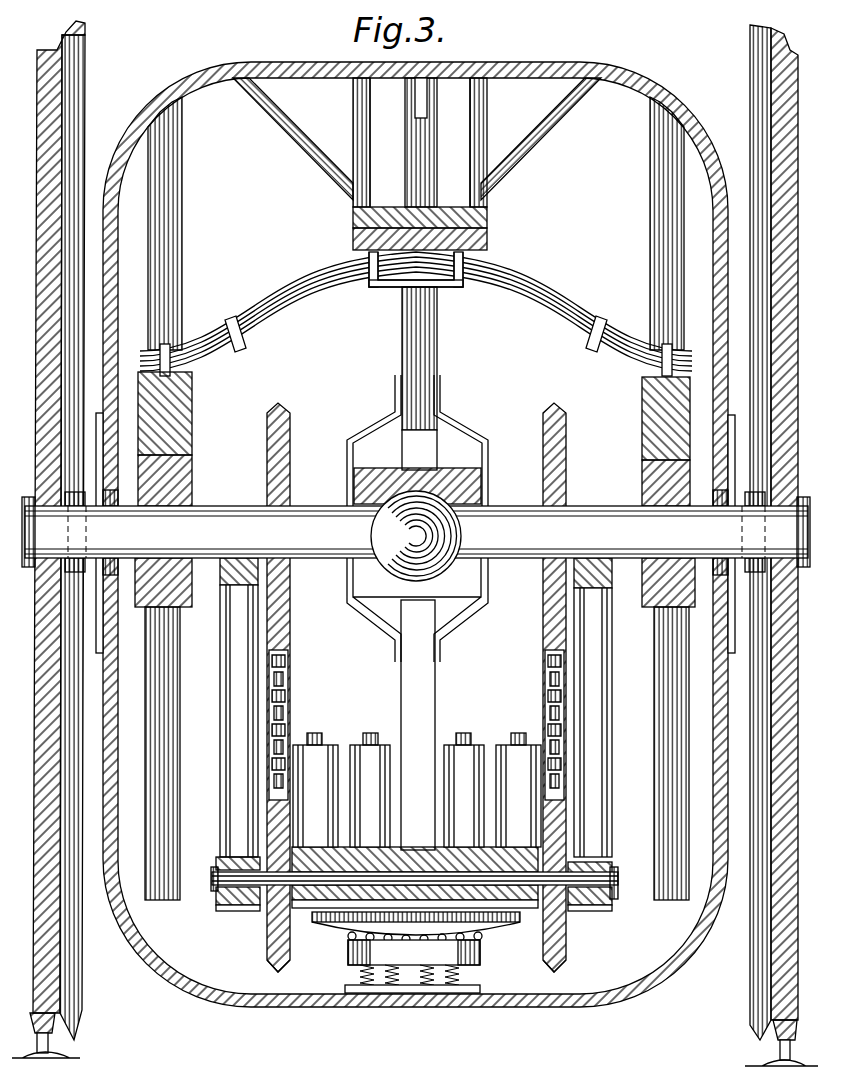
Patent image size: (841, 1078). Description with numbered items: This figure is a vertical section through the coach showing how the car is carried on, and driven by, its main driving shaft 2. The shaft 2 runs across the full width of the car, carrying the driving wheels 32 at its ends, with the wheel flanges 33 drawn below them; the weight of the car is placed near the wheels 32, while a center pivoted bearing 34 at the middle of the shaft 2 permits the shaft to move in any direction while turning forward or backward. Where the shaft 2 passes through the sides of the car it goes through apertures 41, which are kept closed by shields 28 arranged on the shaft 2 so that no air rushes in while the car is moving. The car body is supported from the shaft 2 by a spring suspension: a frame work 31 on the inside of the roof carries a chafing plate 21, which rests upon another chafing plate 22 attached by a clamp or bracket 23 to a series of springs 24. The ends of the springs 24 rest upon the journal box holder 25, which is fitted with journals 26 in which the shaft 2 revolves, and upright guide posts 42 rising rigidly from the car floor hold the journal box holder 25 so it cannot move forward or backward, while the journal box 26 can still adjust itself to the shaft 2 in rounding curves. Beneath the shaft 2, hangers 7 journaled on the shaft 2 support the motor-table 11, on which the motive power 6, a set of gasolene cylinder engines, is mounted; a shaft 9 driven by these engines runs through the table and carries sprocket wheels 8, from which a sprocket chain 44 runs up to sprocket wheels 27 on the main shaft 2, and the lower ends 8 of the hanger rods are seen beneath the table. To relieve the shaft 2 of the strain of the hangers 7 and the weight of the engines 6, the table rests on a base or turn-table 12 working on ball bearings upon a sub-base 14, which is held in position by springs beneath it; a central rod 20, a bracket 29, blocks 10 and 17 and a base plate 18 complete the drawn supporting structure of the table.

The driving shaft 2 is at (528, 560).
The motive power 6 is at (331, 748).
The hangers 7 is at (222, 665).
The sprocket wheels 8 is at (282, 955).
The shaft 9 is at (212, 880).
The end blocks 10 is at (226, 862).
The motor-table 11 is at (526, 905).
The turn-table 12 is at (340, 920).
The sub-base 14 is at (360, 968).
The block 17 is at (373, 965).
The base plate 18 is at (480, 990).
The central rod 20 is at (401, 683).
The chafing plate 21 is at (488, 220).
The chafing plate 22 is at (476, 241).
The clamp or bracket 23 is at (369, 254).
The springs 24 is at (535, 300).
The journal box holder 25 is at (186, 425).
The journal box 26 is at (178, 500).
The sprocket wheels 27 is at (290, 456).
The shields 28 is at (103, 420).
The bracket 29 is at (460, 428).
The frame work 31 is at (353, 103).
The wheels 32 is at (60, 90).
The wheel flanges 33 is at (62, 1035).
The center pivoted bearing 34 is at (386, 574).
The apertures 41 is at (112, 492).
The upright guide posts 42 is at (176, 226).
The sprocket chain 44 is at (284, 712).